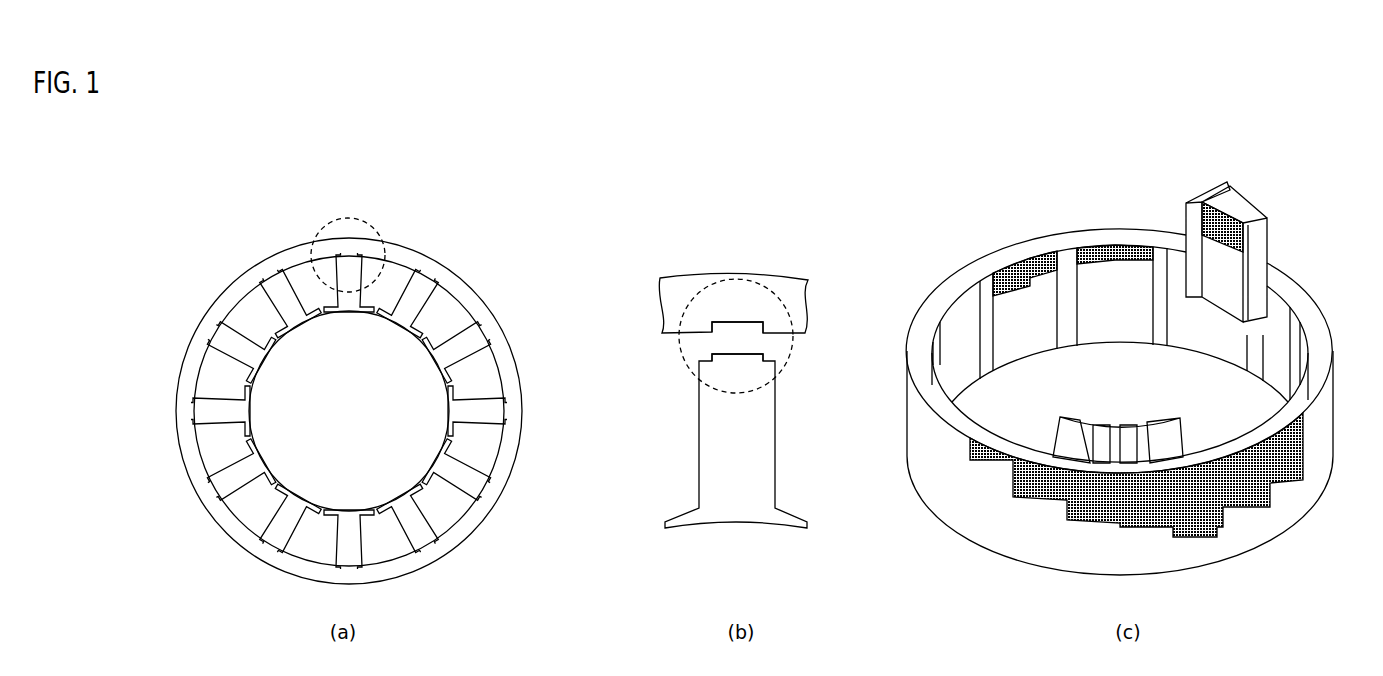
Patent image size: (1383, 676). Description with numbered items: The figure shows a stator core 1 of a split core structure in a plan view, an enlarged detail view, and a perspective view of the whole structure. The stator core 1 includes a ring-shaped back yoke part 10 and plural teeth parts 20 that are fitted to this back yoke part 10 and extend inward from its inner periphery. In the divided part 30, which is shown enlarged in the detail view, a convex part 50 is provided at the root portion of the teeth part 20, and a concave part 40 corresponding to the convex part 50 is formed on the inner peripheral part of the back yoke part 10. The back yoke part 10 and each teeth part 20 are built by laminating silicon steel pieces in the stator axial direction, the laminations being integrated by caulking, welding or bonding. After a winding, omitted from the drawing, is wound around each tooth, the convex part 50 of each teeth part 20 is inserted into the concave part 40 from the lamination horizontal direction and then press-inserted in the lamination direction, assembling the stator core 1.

The stator core 1 is at (432, 240).
The back yoke part 10 is at (452, 278).
The teeth part 20 is at (473, 340).
The divided part 30 is at (356, 225).
The concave part 40 is at (737, 322).
The convex part 50 is at (768, 355).